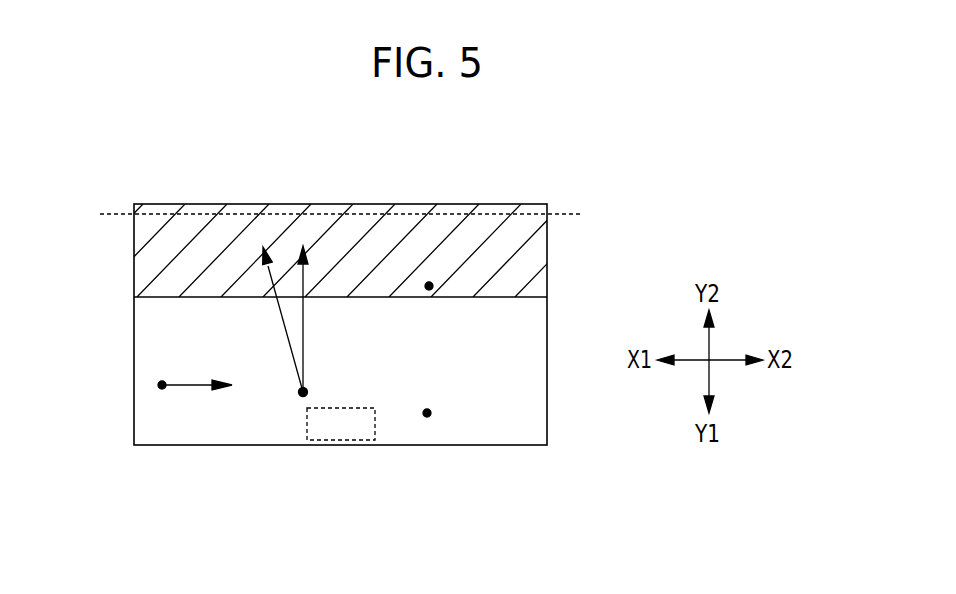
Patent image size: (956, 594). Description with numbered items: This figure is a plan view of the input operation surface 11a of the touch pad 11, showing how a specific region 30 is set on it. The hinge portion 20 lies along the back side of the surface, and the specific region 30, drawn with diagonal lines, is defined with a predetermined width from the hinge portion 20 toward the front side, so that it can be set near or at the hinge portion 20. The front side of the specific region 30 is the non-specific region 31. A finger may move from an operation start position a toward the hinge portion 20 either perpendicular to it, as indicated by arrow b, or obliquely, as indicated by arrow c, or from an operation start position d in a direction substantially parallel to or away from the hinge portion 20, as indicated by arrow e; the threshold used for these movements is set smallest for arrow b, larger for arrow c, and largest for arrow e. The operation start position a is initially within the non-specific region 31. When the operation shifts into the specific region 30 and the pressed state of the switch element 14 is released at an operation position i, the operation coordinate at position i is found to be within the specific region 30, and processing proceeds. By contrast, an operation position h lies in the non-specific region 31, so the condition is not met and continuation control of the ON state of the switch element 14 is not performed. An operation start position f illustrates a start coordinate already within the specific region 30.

The touch pad 11 is at (533, 420).
The input operation surface 11a is at (232, 425).
The switch element 14 is at (356, 442).
The hinge portion 20 is at (514, 210).
The specific region 30 is at (535, 245).
The non-specific region 31 is at (490, 435).
The operation start position a is at (302, 400).
The arrow b is at (305, 318).
The arrow c is at (284, 337).
The operation start position d is at (158, 386).
The arrow e is at (185, 392).
The operation start position f is at (428, 293).
The operation position h is at (427, 420).
The operation position i is at (303, 240).